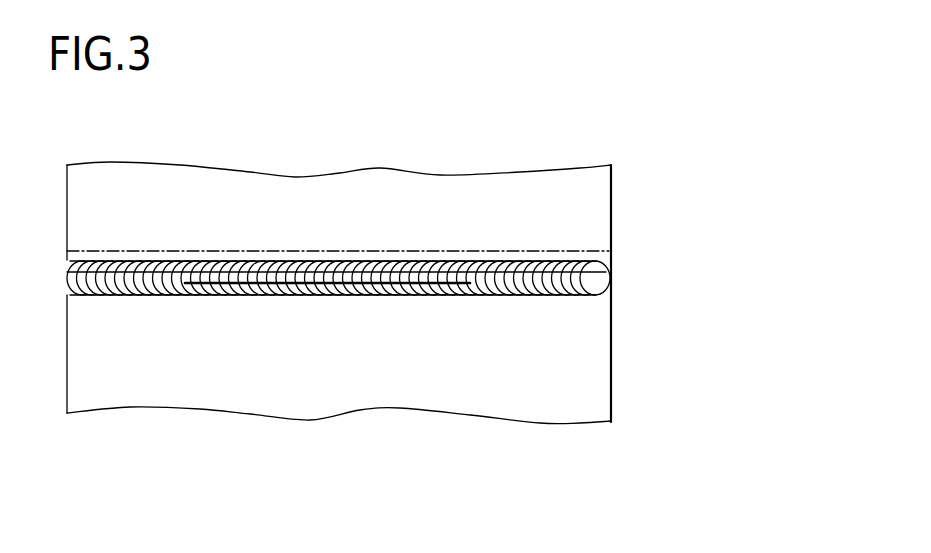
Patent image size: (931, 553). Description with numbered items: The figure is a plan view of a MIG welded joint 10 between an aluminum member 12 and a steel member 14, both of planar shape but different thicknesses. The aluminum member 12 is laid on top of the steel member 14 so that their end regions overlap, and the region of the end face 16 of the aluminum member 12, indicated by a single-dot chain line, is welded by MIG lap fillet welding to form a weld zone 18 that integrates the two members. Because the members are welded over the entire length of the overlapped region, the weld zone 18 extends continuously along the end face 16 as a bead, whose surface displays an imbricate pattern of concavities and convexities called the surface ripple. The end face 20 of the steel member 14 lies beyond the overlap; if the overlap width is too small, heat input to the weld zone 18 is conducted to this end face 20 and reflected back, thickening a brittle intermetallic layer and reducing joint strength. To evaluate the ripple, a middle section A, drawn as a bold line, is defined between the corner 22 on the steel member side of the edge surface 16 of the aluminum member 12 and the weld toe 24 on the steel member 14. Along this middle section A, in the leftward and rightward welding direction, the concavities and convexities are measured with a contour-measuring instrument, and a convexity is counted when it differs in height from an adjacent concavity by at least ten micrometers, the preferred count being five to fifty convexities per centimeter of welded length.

The MIG welded joint 10 is at (563, 131).
The aluminum member 12 is at (582, 200).
The steel member 14 is at (580, 387).
The end face 16 is at (413, 262).
The weld zone 18 is at (185, 258).
The end face 20 is at (573, 248).
The corner 22 is at (611, 267).
The weld toe 24 is at (611, 293).
The middle section A is at (282, 270).